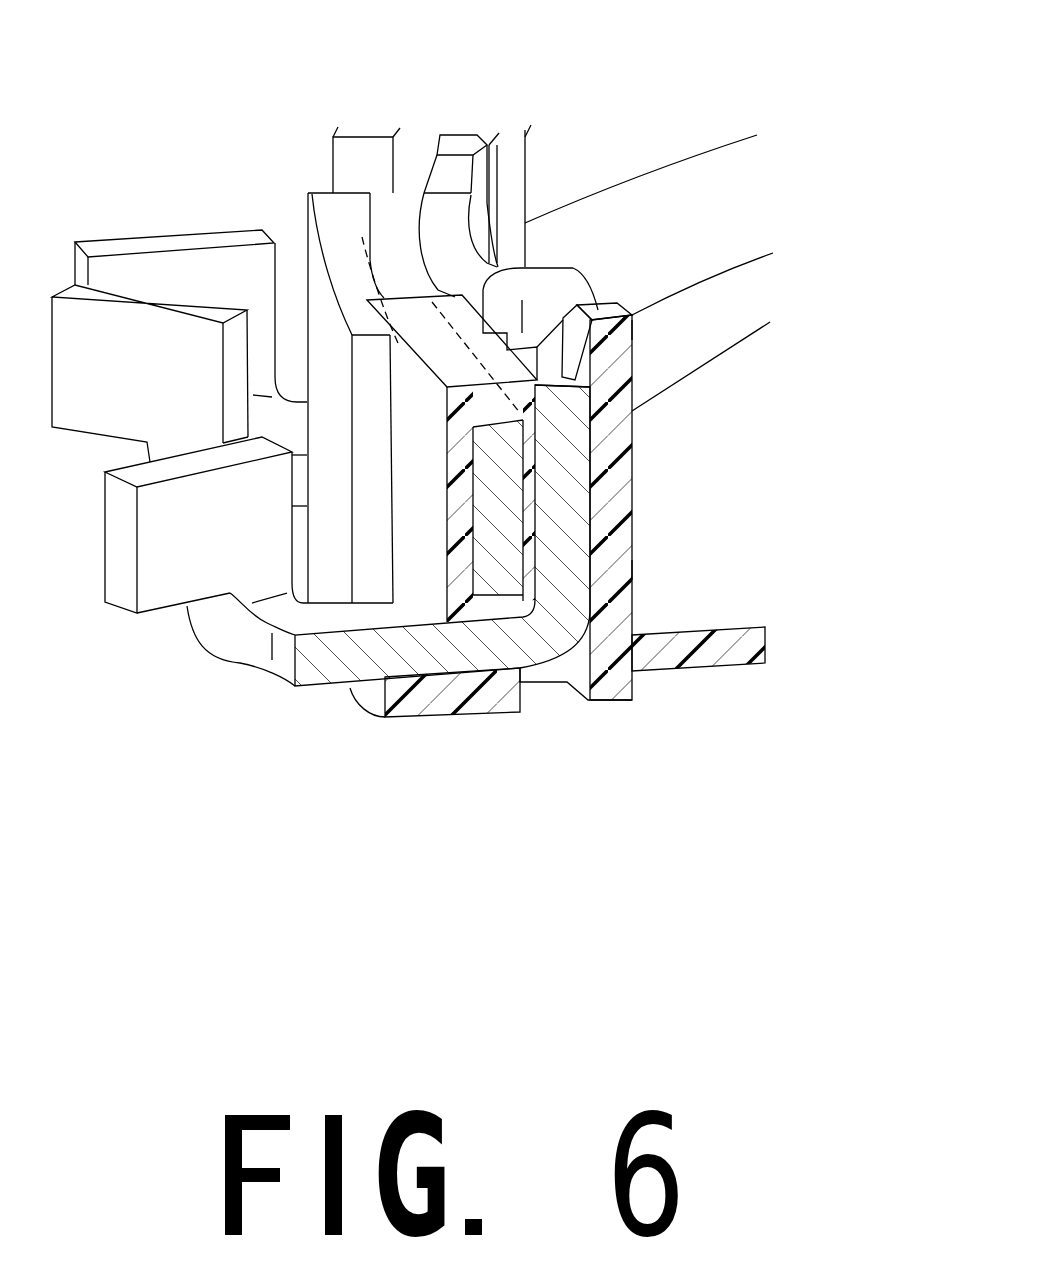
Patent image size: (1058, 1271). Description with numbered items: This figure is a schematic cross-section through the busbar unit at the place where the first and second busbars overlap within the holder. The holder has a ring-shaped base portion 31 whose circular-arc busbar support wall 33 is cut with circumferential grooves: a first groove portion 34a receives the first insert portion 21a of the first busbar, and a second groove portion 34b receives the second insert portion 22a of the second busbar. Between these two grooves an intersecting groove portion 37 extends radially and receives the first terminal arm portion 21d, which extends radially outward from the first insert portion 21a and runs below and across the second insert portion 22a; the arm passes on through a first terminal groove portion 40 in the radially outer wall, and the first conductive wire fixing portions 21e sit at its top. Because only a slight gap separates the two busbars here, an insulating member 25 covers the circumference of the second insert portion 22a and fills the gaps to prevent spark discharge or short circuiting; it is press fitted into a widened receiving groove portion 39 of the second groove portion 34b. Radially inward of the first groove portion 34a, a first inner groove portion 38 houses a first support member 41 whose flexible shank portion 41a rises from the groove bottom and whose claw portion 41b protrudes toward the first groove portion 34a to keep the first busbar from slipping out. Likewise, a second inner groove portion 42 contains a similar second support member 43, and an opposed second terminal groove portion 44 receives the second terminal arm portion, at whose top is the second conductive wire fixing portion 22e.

The second conductive wire fixing portion 22e is at (140, 247).
The first conductive wire fixing portions 21e is at (170, 583).
The first terminal groove portion 40 is at (368, 580).
The second terminal groove portion 44 is at (350, 147).
The receiving groove portion 39 is at (374, 296).
The second groove portion 34b is at (397, 227).
The insulating member 25 is at (433, 580).
The second insert portion 22a is at (396, 222).
The second support member 43 is at (453, 143).
The second inner groove portion 42 is at (492, 158).
The busbar support wall 33 is at (512, 145).
The intersecting groove portion 37 is at (505, 310).
The first groove portion 34a is at (560, 272).
The first inner groove portion 38 is at (571, 313).
The first support member 41 is at (645, 458).
The first insert portion 21a is at (565, 527).
The shank portion 41a is at (632, 568).
The claw portion 41b is at (632, 328).
The first terminal arm portion 21d is at (335, 687).
The base portion 31 is at (723, 328).